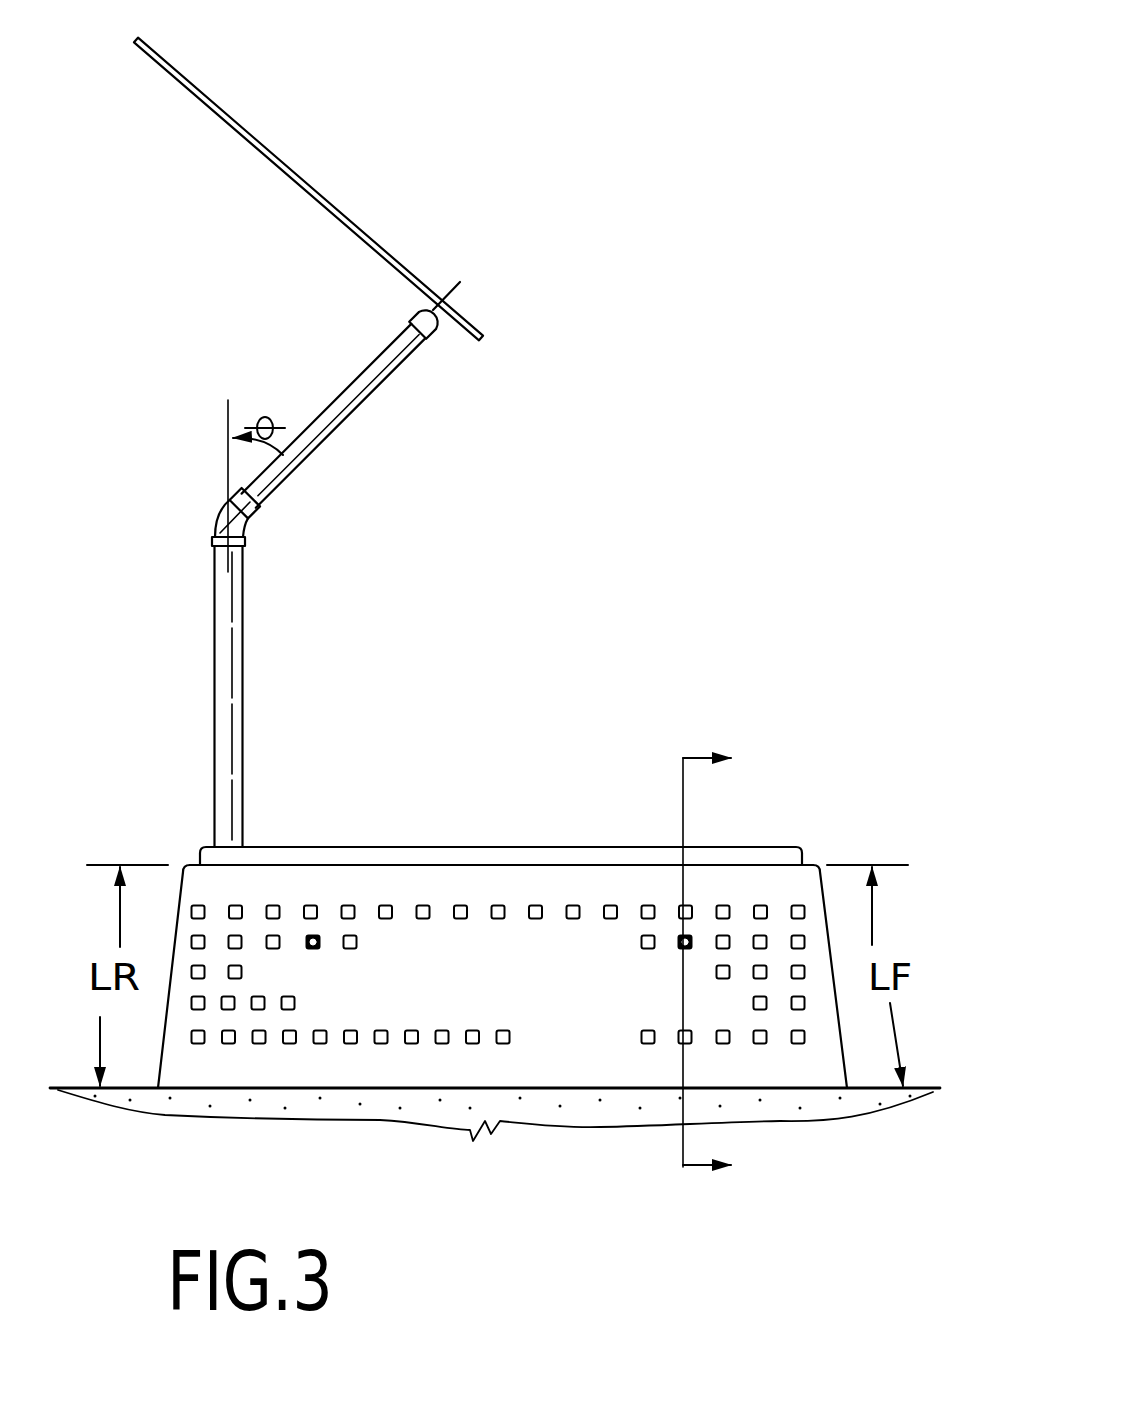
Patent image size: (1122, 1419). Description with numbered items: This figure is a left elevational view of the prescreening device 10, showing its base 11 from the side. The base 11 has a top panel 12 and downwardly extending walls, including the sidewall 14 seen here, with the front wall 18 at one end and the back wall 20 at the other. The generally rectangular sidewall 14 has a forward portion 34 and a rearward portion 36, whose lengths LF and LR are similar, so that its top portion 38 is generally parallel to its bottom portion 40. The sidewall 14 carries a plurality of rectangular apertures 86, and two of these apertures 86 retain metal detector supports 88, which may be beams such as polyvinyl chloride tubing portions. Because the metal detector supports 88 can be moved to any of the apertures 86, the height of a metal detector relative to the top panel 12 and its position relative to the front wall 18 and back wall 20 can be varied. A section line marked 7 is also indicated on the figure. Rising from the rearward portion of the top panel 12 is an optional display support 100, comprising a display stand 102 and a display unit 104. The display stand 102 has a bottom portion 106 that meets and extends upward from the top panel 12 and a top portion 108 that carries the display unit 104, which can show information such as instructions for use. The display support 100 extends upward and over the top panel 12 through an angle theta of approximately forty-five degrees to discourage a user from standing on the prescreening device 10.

The prescreening device 10 is at (786, 567).
The base 11 is at (850, 809).
The top panel 12 is at (440, 846).
The sidewall 14 is at (521, 970).
The front wall 18 is at (828, 904).
The back wall 20 is at (175, 921).
The forward portion 34 is at (818, 982).
The rearward portion 36 is at (208, 875).
The top portion 38 is at (506, 876).
The bottom portion 40 is at (522, 1068).
The apertures 86 is at (650, 905).
The metal detector support 88 is at (315, 934).
The section line 7- 7 is at (719, 962).
The display support 100 is at (351, 445).
The display stand 102 is at (353, 412).
The display unit 104 is at (386, 243).
The bottom portion 106 is at (225, 792).
The top portion 108 is at (434, 337).